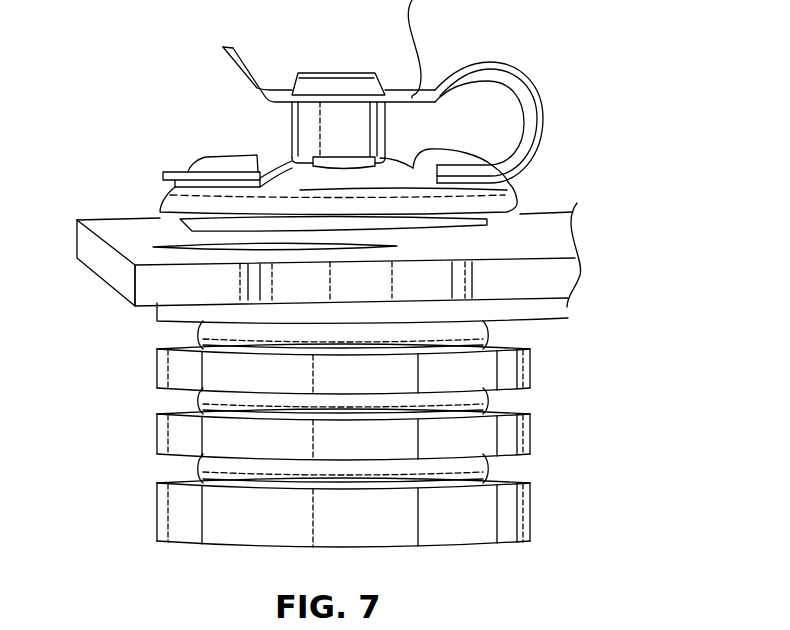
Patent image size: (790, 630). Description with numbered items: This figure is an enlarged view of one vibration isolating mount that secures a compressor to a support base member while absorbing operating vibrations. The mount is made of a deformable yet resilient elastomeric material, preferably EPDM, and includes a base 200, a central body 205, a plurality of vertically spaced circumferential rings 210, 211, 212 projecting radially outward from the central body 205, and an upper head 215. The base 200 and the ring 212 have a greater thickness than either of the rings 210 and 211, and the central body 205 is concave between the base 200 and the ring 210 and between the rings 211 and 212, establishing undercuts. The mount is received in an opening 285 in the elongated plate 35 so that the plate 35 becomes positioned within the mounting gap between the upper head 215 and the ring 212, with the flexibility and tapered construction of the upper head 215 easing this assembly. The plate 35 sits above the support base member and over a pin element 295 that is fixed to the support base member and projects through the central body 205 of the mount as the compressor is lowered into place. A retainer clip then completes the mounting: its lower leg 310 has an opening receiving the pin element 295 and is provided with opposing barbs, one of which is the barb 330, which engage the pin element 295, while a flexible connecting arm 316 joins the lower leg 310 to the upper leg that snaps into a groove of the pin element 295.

The elongated plate 35 is at (553, 230).
The base 200 is at (528, 512).
The central body 205 is at (222, 402).
The circumferential ring 210 is at (528, 432).
The circumferential ring 211 is at (528, 368).
The circumferential ring 212 is at (542, 318).
The upper head 215 is at (505, 200).
The opening 285 is at (195, 232).
The pin element 295 is at (307, 125).
The lower leg 310 is at (212, 177).
The flexible connecting arm 316 is at (518, 68).
The barb 330 is at (358, 158).